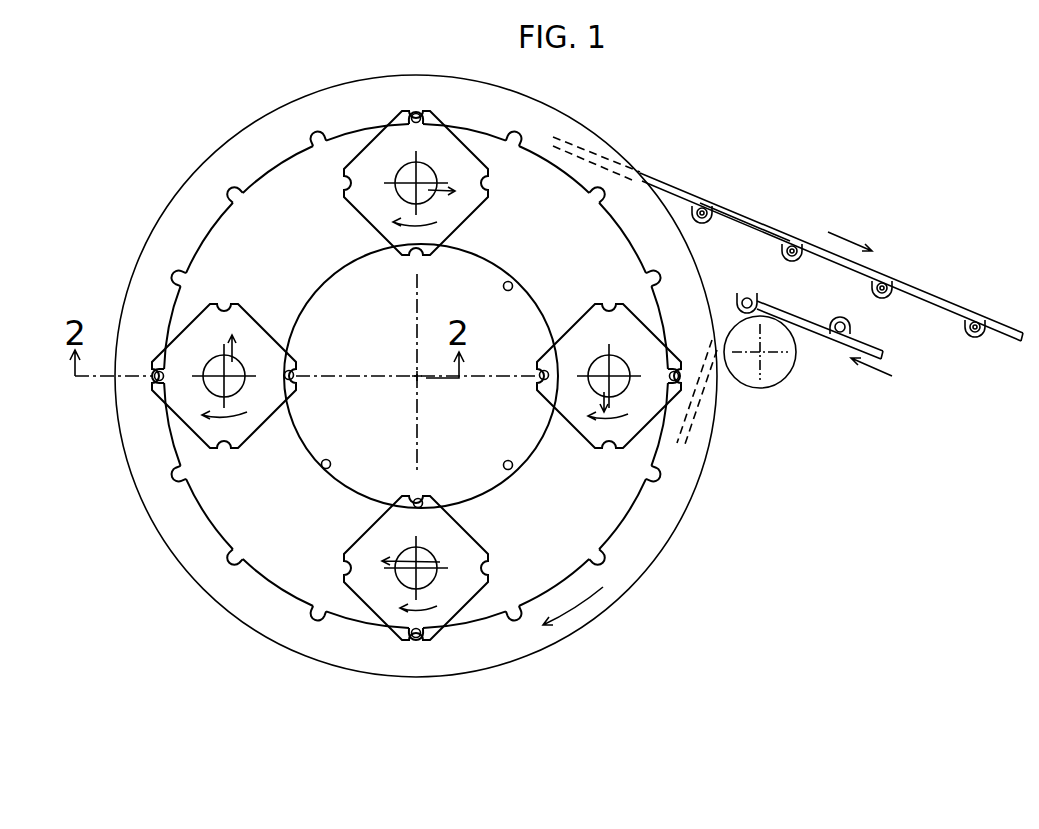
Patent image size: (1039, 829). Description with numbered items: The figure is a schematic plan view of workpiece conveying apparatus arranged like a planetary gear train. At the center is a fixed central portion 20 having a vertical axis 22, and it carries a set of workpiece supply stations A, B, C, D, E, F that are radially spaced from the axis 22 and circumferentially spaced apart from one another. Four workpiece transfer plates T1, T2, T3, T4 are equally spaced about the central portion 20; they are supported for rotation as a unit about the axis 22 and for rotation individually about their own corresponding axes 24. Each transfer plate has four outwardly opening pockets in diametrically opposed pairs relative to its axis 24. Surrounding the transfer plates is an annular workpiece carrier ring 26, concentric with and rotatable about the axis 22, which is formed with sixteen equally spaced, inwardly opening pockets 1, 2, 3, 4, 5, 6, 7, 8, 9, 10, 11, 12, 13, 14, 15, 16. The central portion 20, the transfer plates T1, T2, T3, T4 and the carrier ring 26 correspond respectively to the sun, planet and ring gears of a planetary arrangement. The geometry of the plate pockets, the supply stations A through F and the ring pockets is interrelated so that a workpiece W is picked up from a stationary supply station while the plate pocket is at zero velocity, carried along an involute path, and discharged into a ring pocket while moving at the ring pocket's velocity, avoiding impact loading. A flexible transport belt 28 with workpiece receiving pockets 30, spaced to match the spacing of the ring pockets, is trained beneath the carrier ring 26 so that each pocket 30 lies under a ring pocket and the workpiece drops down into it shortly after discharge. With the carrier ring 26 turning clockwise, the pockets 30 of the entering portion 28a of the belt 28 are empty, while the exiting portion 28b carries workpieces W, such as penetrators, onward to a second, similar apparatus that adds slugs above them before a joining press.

The inwardly opening pocket 1 is at (416, 106).
The inwardly opening pocket 2 is at (514, 126).
The inwardly opening pocket 3 is at (604, 196).
The inwardly opening pocket 4 is at (660, 283).
The inwardly opening pocket 5 is at (682, 363).
The inwardly opening pocket 6 is at (654, 487).
The inwardly opening pocket 7 is at (604, 562).
The inwardly opening pocket 8 is at (514, 626).
The inwardly opening pocket 9 is at (416, 647).
The inwardly opening pocket 10 is at (313, 627).
The inwardly opening pocket 11 is at (226, 564).
The inwardly opening pocket 12 is at (168, 482).
The inwardly opening pocket 13 is at (144, 378).
The inwardly opening pocket 14 is at (165, 276).
The inwardly opening pocket 15 is at (223, 190).
The inwardly opening pocket 16 is at (307, 130).
The fixed central portion 20 is at (464, 419).
The vertical axis 22 is at (417, 376).
The transfer plate axis 24 is at (416, 183).
The annular workpiece carrier ring 26 is at (261, 633).
The flexible transport belt 28 is at (930, 292).
The entering portion of transport belt 28a is at (812, 333).
The exiting portion of transport belt 28b is at (760, 219).
The workpiece receiving pocket 30 is at (703, 208).
The workpiece transfer plate T1 is at (463, 212).
The workpiece transfer plate T2 is at (258, 413).
The workpiece transfer plate T3 is at (368, 540).
The workpiece transfer plate T4 is at (568, 420).
The workpiece supply station A is at (300, 365).
The workpiece supply station B is at (330, 451).
The workpiece supply station C is at (411, 489).
The workpiece supply station D is at (499, 458).
The workpiece supply station E is at (535, 386).
The workpiece supply station F is at (508, 298).
The workpiece W is at (702, 218).